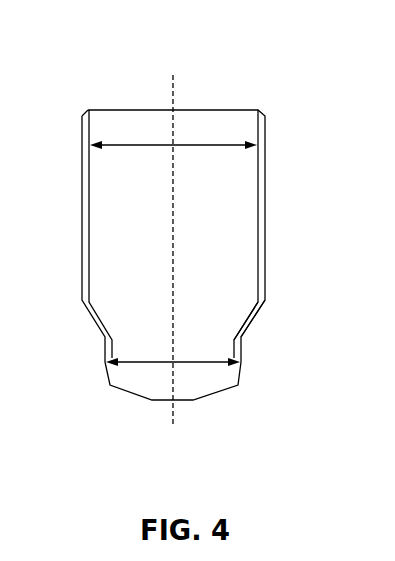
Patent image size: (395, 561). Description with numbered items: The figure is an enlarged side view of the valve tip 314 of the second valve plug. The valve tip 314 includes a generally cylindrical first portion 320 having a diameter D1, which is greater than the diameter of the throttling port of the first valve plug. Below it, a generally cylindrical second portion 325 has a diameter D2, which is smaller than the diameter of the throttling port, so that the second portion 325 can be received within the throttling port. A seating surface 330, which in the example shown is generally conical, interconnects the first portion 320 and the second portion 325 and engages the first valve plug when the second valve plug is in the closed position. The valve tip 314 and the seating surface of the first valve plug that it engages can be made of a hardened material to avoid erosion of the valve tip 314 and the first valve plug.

The valve tip 314 is at (157, 72).
The first portion 320 is at (100, 212).
The second portion 325 is at (132, 377).
The seating surface 330 is at (260, 322).
The diameter of first portion D1 is at (133, 145).
The diameter of second portion D2 is at (200, 363).